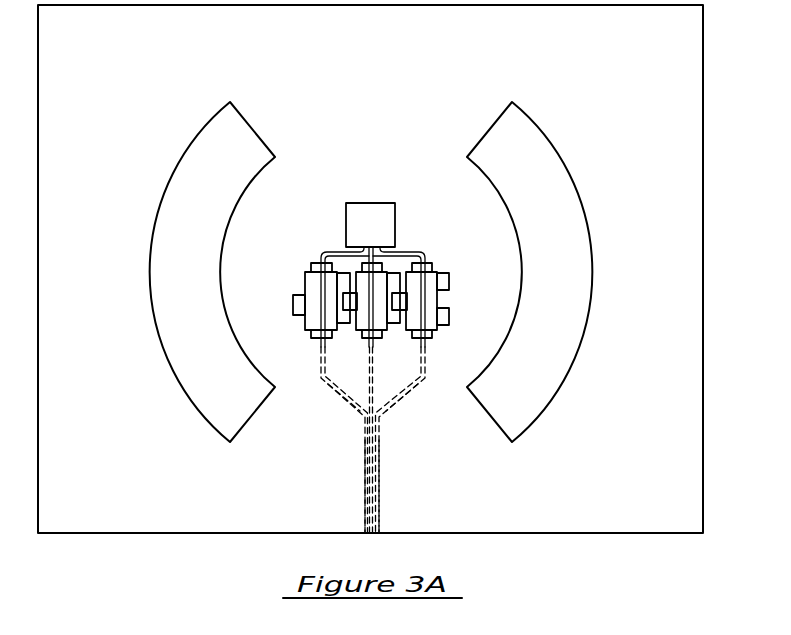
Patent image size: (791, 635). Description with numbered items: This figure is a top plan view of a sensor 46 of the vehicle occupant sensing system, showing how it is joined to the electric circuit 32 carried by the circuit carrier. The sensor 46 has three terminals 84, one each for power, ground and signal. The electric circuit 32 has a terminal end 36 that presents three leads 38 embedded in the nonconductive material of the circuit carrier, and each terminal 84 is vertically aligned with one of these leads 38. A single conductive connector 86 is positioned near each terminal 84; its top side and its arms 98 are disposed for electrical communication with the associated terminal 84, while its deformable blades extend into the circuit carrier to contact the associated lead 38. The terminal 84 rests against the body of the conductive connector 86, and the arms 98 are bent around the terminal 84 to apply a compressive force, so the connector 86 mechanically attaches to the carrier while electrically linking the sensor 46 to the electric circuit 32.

The electric circuit 32 is at (377, 487).
The terminal end 36 is at (335, 404).
The leads 38 is at (370, 348).
The sensor 46 is at (378, 223).
The terminals 84 is at (306, 281).
The conductive connector 86 is at (303, 315).
The arm 98 is at (438, 315).